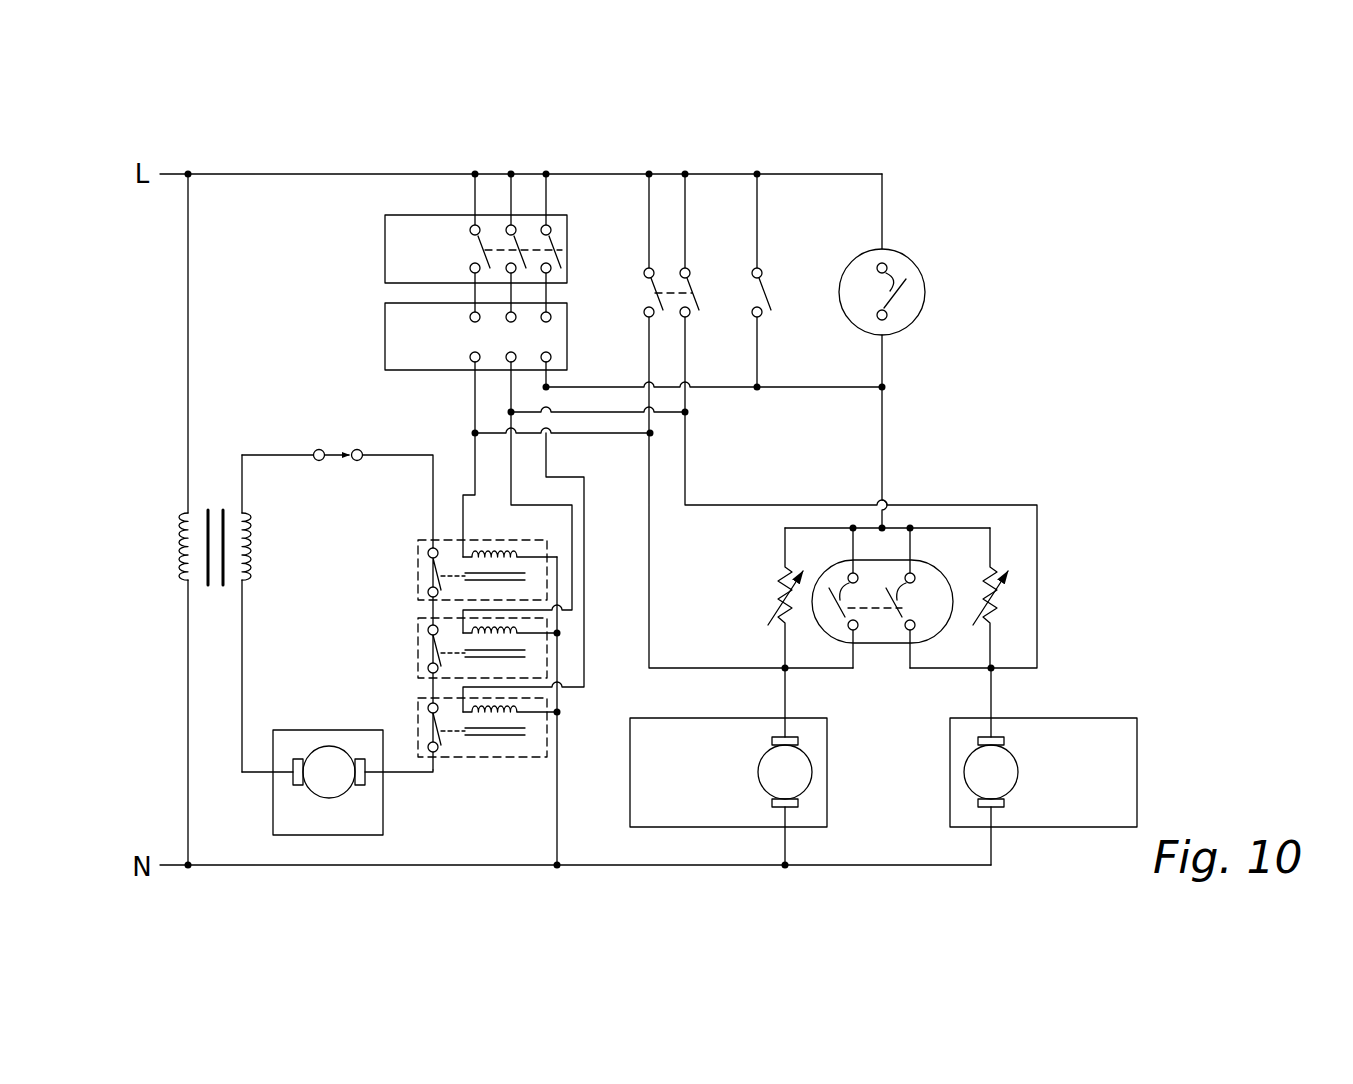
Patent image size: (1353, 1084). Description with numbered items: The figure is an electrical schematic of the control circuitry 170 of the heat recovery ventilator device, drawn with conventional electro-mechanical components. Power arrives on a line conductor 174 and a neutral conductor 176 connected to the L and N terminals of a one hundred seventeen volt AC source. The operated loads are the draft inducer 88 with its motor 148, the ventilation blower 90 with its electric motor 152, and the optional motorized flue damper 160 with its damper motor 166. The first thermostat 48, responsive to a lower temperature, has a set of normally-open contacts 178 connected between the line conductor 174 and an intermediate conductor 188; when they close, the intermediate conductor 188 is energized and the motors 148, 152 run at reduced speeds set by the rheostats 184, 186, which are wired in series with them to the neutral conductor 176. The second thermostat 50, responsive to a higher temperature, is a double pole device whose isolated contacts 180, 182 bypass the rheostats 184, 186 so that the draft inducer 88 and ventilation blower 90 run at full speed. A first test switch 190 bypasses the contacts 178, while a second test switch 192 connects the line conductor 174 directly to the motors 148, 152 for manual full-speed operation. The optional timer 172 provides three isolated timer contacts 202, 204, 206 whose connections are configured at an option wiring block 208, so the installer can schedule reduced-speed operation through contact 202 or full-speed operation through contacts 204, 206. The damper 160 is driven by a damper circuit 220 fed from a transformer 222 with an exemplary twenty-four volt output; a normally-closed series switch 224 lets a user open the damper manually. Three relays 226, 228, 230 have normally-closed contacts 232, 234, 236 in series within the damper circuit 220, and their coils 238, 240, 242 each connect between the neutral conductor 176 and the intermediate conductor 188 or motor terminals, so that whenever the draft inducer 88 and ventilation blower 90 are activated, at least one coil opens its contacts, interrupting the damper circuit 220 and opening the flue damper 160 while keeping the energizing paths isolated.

The first thermostat 48 is at (913, 351).
The second thermostat 50 is at (854, 588).
The draft inducer 88 is at (1005, 777).
The ventilation blower 90 is at (730, 766).
The motor 148 is at (963, 772).
The electric motor 152 is at (815, 775).
The motorized flue damper 160 is at (331, 794).
The damper motor 166 is at (296, 785).
The control circuitry 170 is at (992, 290).
The timer 172 is at (457, 199).
The line conductor 174 is at (812, 174).
The neutral conductor 176 is at (300, 865).
The set of normally-open contacts 178 is at (906, 314).
The set of normally-open contacts 180 is at (926, 596).
The set of normally-open contacts 182 is at (830, 616).
The rheostat 184 is at (1016, 605).
The rheostat 186 is at (766, 591).
The intermediate conductor 188 is at (928, 505).
The first test switch 190 is at (777, 290).
The second test switch 192 is at (697, 268).
The timer contact 202 is at (572, 244).
The timer contact 204 is at (519, 228).
The timer contact 206 is at (492, 228).
The option wiring block 208 is at (385, 337).
The damper circuit 220 is at (303, 428).
The transformer 222 is at (240, 500).
The normally-closed series-connected switch 224 is at (335, 452).
The relay 226 is at (459, 744).
The relay 228 is at (494, 645).
The relay 230 is at (434, 583).
The normally-closed contacts 232 is at (441, 738).
The normally-closed contacts 234 is at (437, 652).
The normally-closed contacts 236 is at (437, 573).
The relay coil 238 is at (520, 715).
The relay coil 240 is at (520, 636).
The relay coil 242 is at (466, 557).